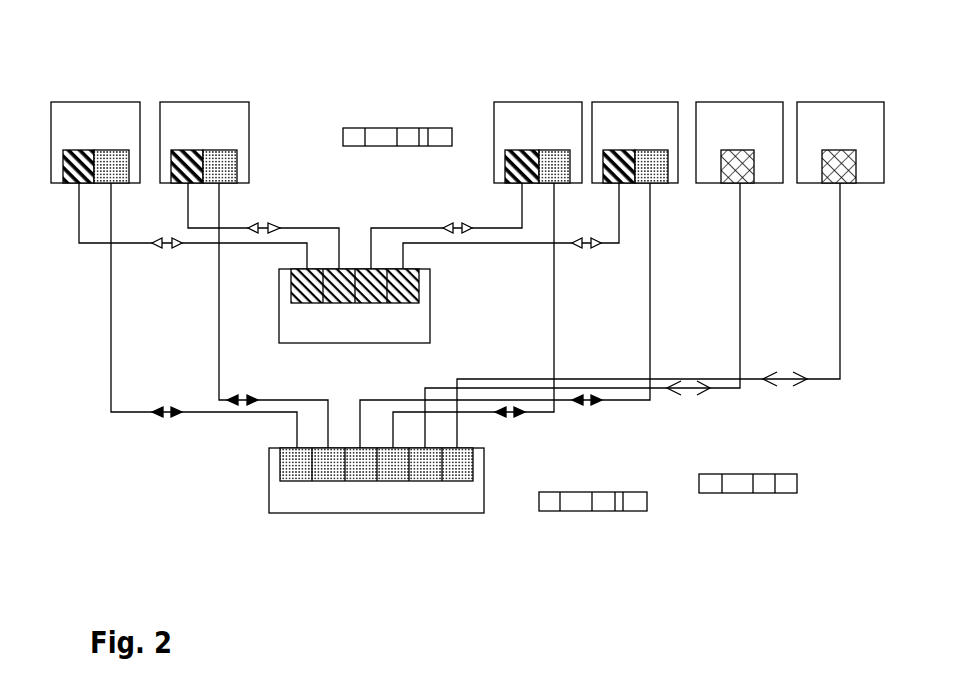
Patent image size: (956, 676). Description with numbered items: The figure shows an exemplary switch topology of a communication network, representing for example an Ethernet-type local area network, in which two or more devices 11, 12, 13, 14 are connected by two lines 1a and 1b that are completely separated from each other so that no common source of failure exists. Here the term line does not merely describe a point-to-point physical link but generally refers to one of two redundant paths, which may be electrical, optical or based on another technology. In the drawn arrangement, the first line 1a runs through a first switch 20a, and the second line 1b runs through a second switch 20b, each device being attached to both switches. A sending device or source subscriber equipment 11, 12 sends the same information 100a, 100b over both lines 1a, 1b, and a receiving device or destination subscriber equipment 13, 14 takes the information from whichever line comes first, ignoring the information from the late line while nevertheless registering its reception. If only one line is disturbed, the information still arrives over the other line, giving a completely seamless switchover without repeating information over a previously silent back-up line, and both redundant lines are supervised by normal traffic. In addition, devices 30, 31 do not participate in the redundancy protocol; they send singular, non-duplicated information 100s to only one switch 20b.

The device 11 is at (94, 101).
The device 12 is at (200, 101).
The device 13 is at (538, 101).
The device 14 is at (633, 101).
The device 30 is at (740, 100).
The device 31 is at (841, 100).
The line 1a is at (96, 254).
The line 1b is at (108, 371).
The switch 20a is at (273, 307).
The switch 20b is at (268, 481).
The information 100a is at (460, 217).
The information 100b is at (513, 420).
The singular information 100s is at (697, 405).